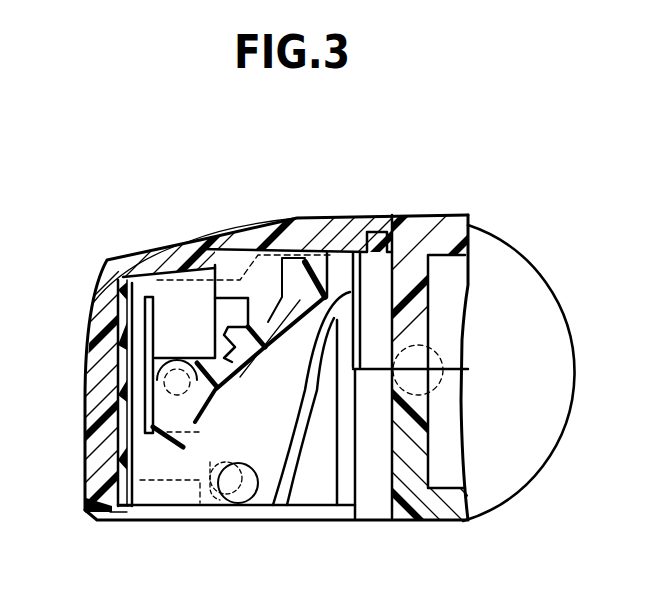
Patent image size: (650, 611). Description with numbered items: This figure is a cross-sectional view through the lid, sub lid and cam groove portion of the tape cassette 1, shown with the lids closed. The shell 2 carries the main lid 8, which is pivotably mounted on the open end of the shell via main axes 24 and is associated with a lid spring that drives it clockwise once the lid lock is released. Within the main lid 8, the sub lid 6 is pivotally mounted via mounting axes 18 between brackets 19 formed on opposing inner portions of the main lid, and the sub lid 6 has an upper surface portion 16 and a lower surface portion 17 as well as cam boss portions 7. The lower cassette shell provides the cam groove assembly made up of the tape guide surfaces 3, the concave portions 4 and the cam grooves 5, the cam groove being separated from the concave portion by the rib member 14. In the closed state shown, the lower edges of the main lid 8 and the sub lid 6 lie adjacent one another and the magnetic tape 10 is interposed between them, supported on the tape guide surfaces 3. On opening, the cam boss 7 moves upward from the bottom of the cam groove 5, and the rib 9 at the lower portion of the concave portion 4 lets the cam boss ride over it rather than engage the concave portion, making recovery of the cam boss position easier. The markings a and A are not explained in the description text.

The tape cassette 1 is at (203, 185).
The shell 2 is at (166, 522).
The tape guide surface 3 is at (130, 437).
The concave portion 4 is at (150, 405).
The cam groove 5 is at (275, 383).
The sub lid 6 is at (337, 156).
The cam boss portion 7 is at (242, 494).
The main lid 8 is at (97, 270).
The rib 9 is at (182, 500).
The magnetic tape 10 is at (133, 357).
The rib member 14 is at (247, 410).
The upper surface portion 16 is at (330, 230).
The lower surface portion 17 is at (308, 303).
The mounting axis 18 is at (150, 352).
The bracket 19 is at (162, 293).
The main axis 24 is at (441, 372).
The direction a is at (222, 478).
The point A is at (125, 520).